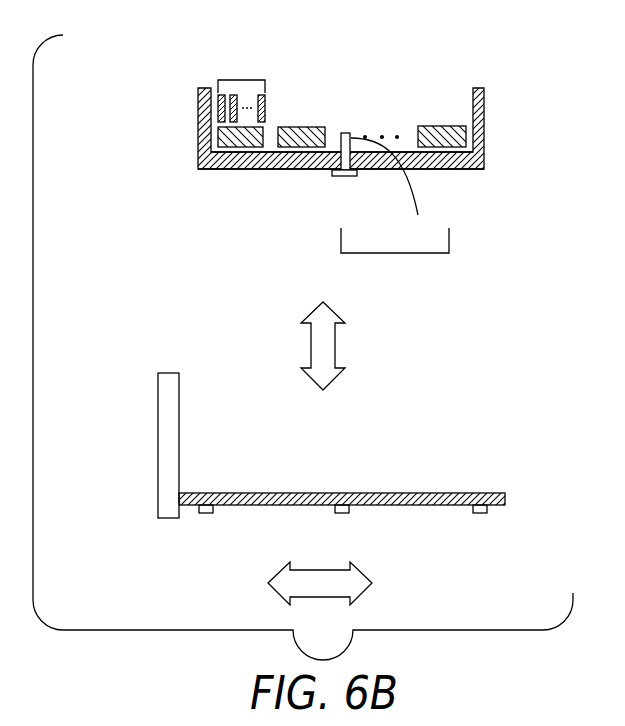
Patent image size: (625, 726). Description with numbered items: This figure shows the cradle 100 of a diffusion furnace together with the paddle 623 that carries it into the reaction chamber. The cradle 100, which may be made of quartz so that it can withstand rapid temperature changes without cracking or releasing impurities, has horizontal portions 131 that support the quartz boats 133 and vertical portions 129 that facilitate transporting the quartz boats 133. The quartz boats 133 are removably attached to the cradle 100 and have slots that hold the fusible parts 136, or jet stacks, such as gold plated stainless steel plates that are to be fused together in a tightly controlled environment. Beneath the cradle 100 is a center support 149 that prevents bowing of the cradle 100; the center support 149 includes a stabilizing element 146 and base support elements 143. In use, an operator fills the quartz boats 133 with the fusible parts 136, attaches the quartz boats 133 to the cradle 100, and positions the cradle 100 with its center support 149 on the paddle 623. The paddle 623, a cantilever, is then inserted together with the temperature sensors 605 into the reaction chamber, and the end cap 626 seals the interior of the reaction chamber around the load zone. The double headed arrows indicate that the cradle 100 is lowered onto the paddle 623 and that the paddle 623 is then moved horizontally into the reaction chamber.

The cradle 100 is at (148, 116).
The vertical portions 129 is at (485, 131).
The horizontal portions 131 is at (453, 169).
The quartz boats 133 is at (455, 125).
The fusible parts 136 is at (241, 79).
The base support elements 143 is at (357, 174).
The stabilizing element 146 is at (390, 190).
The center support 149 is at (398, 254).
The temperature sensors 605 is at (480, 513).
The paddle 623 is at (452, 493).
The end cap 626 is at (158, 408).